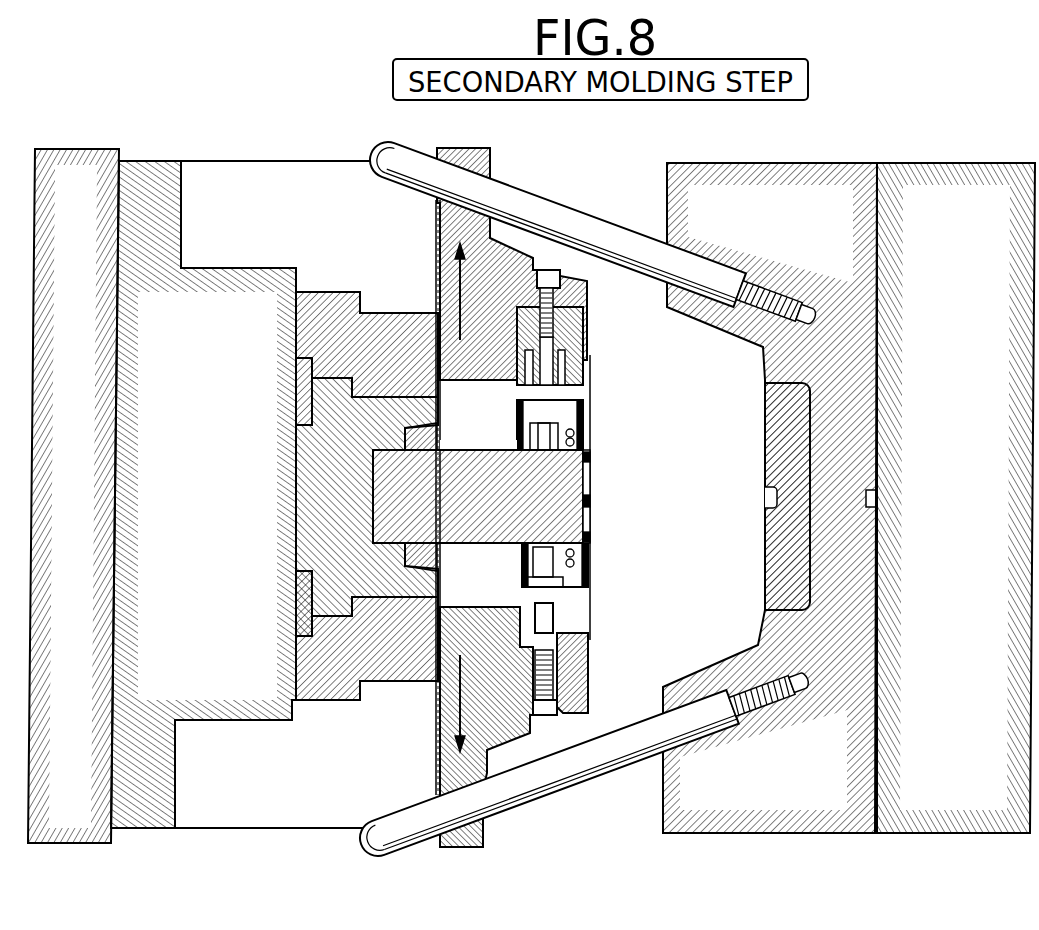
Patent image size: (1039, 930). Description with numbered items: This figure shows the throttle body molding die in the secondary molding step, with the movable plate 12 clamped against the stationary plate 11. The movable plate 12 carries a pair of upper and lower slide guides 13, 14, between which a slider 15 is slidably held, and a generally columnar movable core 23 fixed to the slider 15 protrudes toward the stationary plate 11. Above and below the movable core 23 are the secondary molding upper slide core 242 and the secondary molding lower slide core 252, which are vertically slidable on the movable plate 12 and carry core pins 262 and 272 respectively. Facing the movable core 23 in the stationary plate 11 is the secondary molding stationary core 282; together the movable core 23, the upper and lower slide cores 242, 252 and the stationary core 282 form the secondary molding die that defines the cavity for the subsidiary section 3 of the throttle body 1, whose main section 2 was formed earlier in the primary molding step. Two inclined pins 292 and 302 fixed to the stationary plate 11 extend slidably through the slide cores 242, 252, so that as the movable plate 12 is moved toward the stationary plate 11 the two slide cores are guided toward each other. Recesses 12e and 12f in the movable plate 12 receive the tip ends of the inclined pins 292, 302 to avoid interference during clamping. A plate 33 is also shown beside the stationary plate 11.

The throttle body 1 is at (596, 443).
The main section 2 is at (473, 440).
The subsidiary section 3 is at (515, 432).
The stationary plate 11 is at (827, 162).
The movable plate 12 is at (147, 198).
The recess 12e is at (295, 182).
The recess 12f is at (262, 812).
The upper slide guide 13 is at (330, 322).
The lower slide guide 14 is at (337, 647).
The slider 15 is at (310, 497).
The movable core 23 is at (503, 508).
The secondary molding upper slide core 242 is at (508, 297).
The secondary molding lower slide core 252 is at (508, 722).
The core pin 262 is at (547, 368).
The core pin 272 is at (550, 610).
The secondary molding stationary core 282 is at (767, 465).
The inclined pin 292 is at (523, 192).
The inclined pin 302 is at (437, 818).
The mold base plate 33 is at (953, 183).